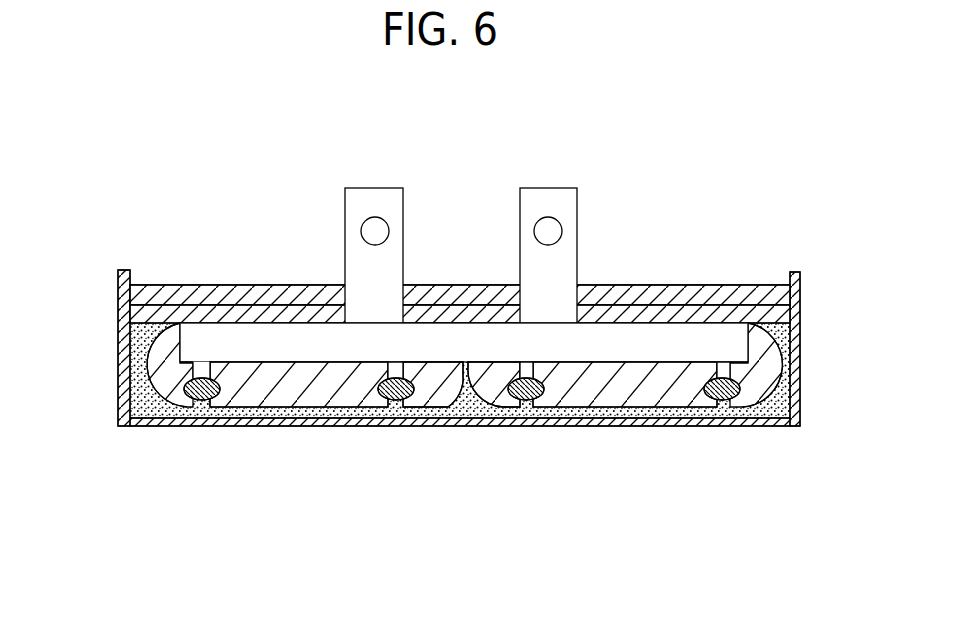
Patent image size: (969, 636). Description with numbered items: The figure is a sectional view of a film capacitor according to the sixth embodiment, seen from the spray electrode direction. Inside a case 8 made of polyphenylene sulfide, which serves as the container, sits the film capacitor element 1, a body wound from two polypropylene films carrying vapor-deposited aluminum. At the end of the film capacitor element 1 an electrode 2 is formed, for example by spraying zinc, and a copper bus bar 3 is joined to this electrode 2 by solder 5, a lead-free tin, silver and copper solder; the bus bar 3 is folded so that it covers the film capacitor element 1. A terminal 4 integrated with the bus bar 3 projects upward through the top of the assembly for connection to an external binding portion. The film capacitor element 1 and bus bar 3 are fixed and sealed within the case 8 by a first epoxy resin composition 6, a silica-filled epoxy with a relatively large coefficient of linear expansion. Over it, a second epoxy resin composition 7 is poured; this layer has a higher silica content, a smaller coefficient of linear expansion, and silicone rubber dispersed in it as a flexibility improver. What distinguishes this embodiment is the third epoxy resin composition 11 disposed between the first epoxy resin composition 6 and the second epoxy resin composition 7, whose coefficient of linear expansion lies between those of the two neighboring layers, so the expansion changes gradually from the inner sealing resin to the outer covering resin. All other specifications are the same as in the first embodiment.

The film capacitor element 1 is at (150, 376).
The electrode 2 is at (433, 382).
The bus bar 3 is at (197, 343).
The terminal 4 is at (523, 188).
The solder 5 is at (192, 384).
The first epoxy resin composition 6 is at (140, 342).
The second epoxy resin composition 7 is at (688, 295).
The case 8 is at (118, 413).
The third epoxy resin composition 11 is at (625, 315).